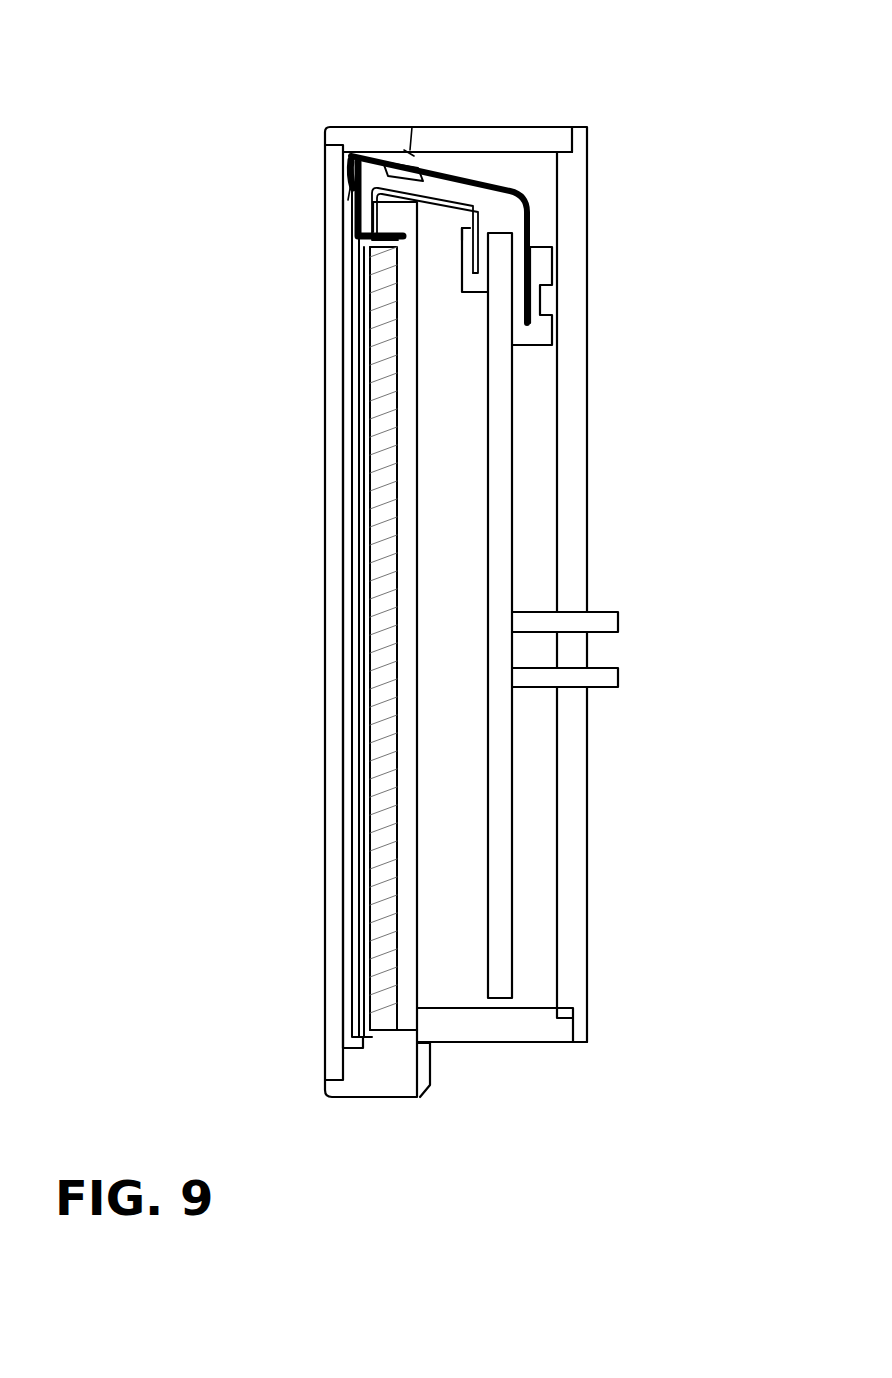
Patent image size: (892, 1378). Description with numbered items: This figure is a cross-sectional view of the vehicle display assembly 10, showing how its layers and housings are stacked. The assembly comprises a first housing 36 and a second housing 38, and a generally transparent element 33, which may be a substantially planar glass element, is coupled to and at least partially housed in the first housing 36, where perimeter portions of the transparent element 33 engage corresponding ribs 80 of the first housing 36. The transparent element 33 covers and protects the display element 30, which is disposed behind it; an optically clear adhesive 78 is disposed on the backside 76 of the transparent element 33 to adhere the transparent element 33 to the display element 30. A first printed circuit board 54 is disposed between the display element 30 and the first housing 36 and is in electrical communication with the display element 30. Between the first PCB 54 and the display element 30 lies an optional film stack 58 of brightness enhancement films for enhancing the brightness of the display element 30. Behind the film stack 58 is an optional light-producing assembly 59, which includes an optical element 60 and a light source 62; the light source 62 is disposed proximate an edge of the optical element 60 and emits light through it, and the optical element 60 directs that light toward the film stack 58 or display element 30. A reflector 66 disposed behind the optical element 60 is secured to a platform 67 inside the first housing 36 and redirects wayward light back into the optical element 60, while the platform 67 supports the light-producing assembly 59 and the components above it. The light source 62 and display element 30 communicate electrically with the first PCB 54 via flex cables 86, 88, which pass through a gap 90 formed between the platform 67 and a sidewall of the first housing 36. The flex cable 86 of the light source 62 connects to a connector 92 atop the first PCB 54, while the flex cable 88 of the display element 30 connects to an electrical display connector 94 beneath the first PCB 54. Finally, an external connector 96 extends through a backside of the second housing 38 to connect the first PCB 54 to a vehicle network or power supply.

The vehicle display assembly 10 is at (750, 152).
The display element 30 is at (345, 818).
The transparent element 33 is at (324, 181).
The first housing 36 is at (377, 122).
The second housing 38 is at (507, 122).
The first printed circuit board 54 is at (500, 448).
The film stack 58 is at (368, 910).
The light-producing assembly 59 is at (404, 222).
The optical element 60 is at (382, 422).
The light source 62 is at (352, 243).
The reflector 66 is at (405, 420).
The platform 67 is at (402, 795).
The backside 76 is at (350, 180).
The optically clear adhesive 78 is at (342, 572).
The ribs 80 is at (353, 127).
The flex cable 86 is at (530, 188).
The flex cable 88 is at (437, 152).
The gap 90 is at (412, 127).
The connector 92 is at (465, 285).
The electrical display connector 94 is at (545, 273).
The external connector 96 is at (606, 611).